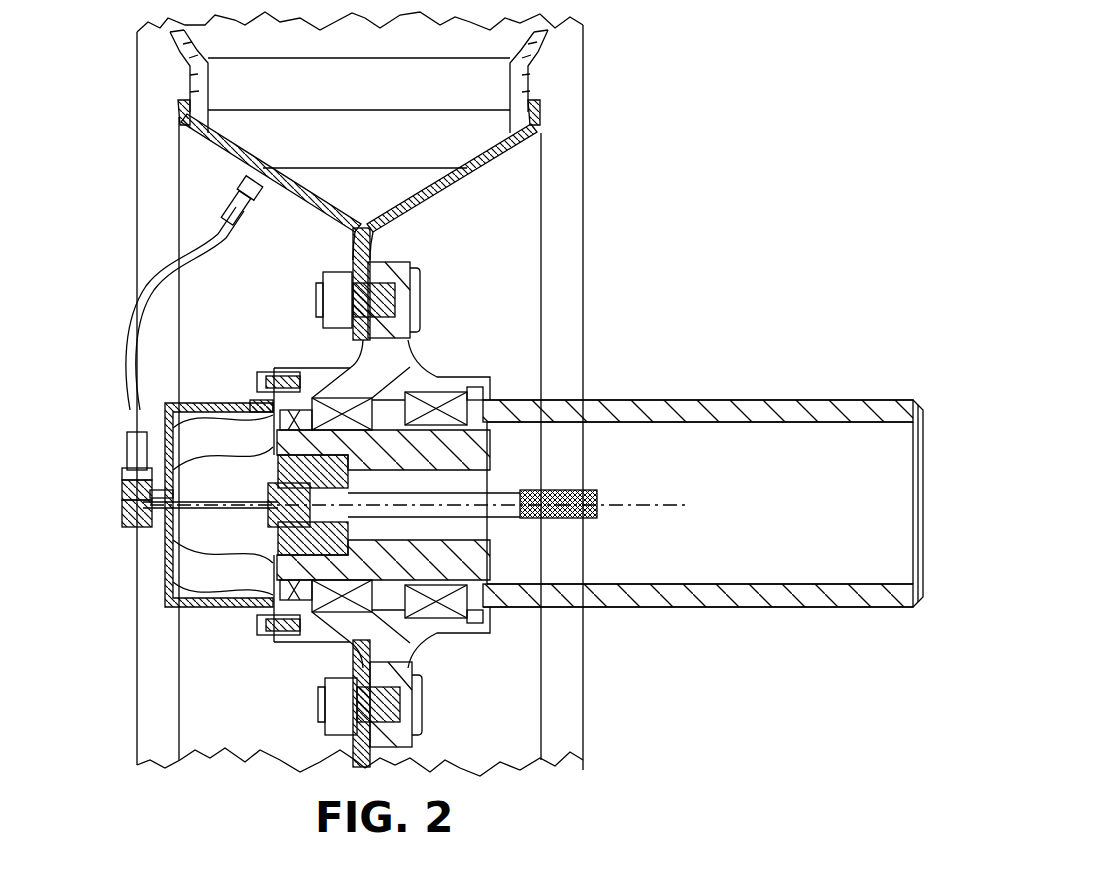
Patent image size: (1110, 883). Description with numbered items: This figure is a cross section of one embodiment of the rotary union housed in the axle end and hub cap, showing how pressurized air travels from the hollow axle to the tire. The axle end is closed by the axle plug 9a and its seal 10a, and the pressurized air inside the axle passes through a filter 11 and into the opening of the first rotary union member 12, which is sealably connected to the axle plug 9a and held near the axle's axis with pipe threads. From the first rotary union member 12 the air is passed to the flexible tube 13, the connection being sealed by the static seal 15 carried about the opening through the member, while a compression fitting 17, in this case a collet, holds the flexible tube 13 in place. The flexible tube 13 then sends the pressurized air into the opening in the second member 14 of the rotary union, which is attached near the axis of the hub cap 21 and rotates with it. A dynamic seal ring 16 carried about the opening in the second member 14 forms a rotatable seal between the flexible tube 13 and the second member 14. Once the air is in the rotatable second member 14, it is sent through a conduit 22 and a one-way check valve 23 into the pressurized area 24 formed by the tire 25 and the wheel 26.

The axle plug 9a is at (150, 397).
The seal 10a is at (233, 617).
The filter 11 is at (590, 490).
The first rotary union member 12 is at (170, 412).
The flexible tube 13 is at (143, 530).
The second member 14 is at (123, 488).
The static seal 15 is at (153, 547).
The dynamic seal ring 16 is at (123, 513).
The compression fitting 17 is at (147, 472).
The hub cap 21 is at (163, 597).
The conduit 22 is at (155, 297).
The one-way check valve 23 is at (227, 200).
The pressurized area 24 is at (452, 145).
The tire 25 is at (530, 55).
The wheel 26 is at (440, 210).